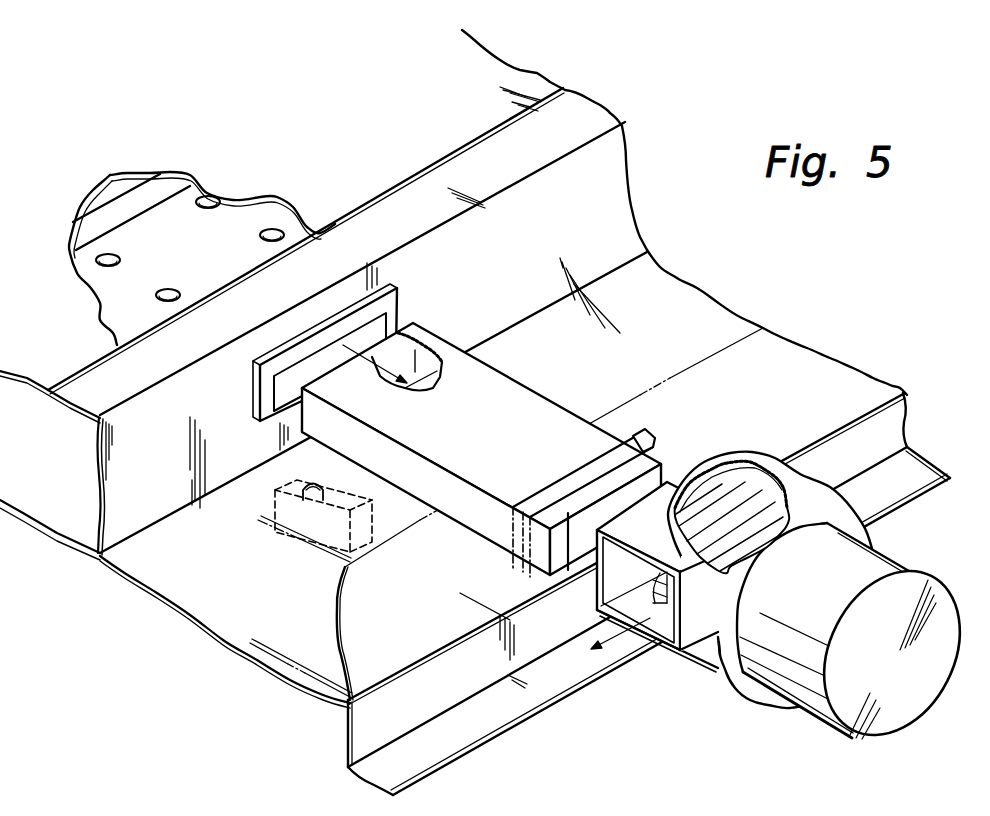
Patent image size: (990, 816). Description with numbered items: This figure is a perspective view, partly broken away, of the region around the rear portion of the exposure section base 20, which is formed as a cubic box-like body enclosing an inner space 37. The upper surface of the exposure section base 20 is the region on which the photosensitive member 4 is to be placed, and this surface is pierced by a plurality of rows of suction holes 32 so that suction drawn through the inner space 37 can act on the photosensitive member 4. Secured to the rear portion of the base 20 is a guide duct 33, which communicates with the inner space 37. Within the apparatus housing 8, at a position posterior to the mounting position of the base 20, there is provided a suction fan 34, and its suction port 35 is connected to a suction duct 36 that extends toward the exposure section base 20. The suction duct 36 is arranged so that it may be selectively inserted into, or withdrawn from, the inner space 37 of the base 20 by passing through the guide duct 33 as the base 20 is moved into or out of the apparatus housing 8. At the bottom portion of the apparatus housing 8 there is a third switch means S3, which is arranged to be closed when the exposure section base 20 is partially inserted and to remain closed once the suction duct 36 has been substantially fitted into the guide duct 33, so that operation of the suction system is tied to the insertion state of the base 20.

The photosensitive member 4 is at (378, 167).
The apparatus housing 8 is at (460, 690).
The exposure section base 20 is at (124, 532).
The suction holes 32 is at (170, 298).
The guide duct 33 is at (390, 300).
The suction fan 34 is at (778, 482).
The suction port 35 is at (666, 474).
The suction duct 36 is at (490, 382).
The space 37 is at (97, 495).
The third switch means S3 is at (297, 527).